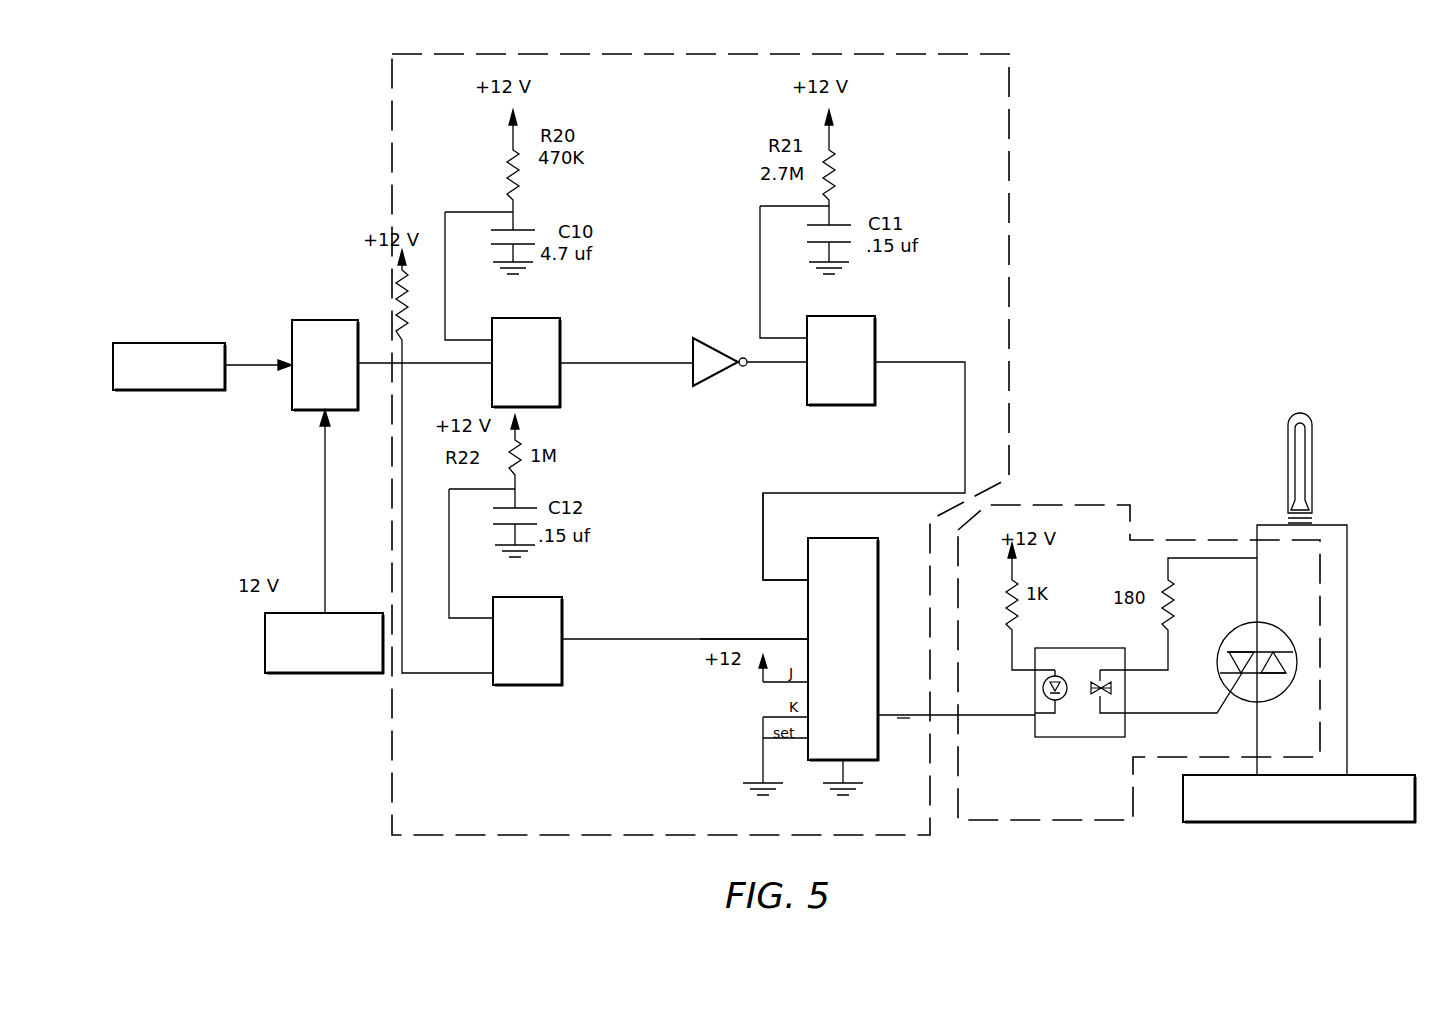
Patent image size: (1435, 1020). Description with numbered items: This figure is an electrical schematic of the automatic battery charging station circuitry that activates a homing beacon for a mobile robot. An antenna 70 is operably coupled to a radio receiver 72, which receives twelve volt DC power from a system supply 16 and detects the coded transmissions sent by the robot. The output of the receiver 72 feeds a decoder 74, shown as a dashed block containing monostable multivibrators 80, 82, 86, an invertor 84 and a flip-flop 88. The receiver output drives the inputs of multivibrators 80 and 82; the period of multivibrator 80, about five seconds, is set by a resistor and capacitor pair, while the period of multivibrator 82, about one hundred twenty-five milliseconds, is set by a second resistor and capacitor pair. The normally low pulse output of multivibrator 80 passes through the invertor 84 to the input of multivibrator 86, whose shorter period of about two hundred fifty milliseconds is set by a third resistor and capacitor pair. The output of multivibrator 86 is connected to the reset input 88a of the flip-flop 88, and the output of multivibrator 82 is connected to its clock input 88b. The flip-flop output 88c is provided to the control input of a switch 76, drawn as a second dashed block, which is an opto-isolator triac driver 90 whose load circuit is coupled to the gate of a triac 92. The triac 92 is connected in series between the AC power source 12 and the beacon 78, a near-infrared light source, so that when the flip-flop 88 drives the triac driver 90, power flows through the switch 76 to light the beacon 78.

The AC power source 12 is at (1318, 825).
The system supply 16 is at (265, 655).
The antenna 70 is at (140, 343).
The radio receiver 72 is at (310, 320).
The decoder 74 is at (1009, 148).
The switch 76 is at (1143, 540).
The beacon 78 is at (1313, 478).
The monostable multivibrator 80 is at (560, 340).
The monostable multivibrator 82 is at (562, 617).
The invertor 84 is at (712, 344).
The monostable multivibrator 86 is at (875, 388).
The flip-flop 88 is at (878, 573).
The reset input 88a is at (788, 560).
The clock input 88b is at (785, 638).
The Q-bar output of flip-flop 88c is at (878, 712).
The opto-isolator triac driver 90 is at (1085, 737).
The triac 92 is at (1248, 626).